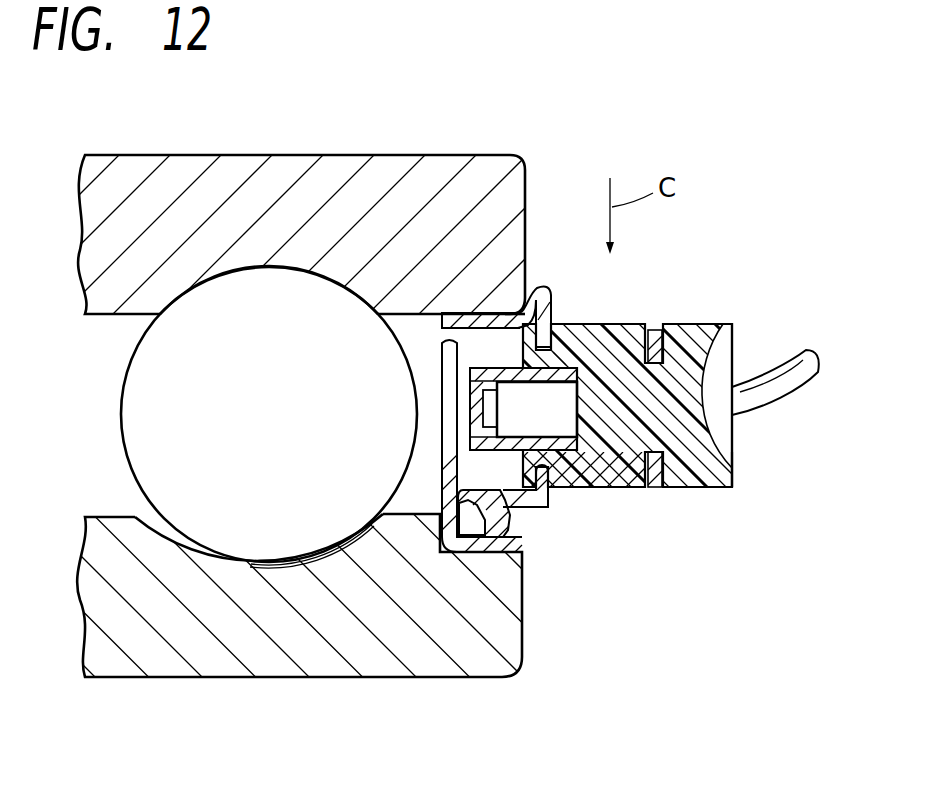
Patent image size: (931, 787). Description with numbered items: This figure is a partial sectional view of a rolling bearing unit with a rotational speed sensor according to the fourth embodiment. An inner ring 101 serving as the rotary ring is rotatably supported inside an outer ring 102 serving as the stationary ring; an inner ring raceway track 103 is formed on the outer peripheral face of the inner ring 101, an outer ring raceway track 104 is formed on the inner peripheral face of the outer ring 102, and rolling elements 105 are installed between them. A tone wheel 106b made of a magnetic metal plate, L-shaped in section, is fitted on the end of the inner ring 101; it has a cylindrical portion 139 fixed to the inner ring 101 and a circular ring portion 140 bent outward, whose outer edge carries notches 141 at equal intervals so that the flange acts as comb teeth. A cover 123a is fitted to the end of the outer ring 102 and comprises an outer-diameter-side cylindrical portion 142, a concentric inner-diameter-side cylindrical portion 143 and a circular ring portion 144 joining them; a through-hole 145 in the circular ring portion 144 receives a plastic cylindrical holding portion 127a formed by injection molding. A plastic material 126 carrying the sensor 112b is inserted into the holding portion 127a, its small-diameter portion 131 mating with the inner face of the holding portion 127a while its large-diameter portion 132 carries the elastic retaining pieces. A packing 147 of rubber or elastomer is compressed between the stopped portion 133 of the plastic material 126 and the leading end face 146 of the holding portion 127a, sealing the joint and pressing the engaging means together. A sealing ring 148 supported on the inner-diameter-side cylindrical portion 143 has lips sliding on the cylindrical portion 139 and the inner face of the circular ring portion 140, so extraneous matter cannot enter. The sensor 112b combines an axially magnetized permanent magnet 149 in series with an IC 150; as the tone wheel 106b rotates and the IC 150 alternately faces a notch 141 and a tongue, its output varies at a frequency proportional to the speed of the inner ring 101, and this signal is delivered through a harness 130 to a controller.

The inner ring 101 is at (408, 652).
The outer ring 102 is at (345, 157).
The inner ring raceway track 103 is at (236, 560).
The outer ring raceway track 104 is at (262, 268).
The rolling elements 105 is at (199, 300).
The tone wheel 106b is at (405, 560).
The sensor 112b is at (645, 488).
The cover 123a is at (487, 313).
The plastic material 126 is at (728, 323).
The cylindrical holding portion 127a is at (575, 488).
The harness 130 is at (790, 390).
The small-diameter portion 131 is at (620, 340).
The large-diameter portion 132 is at (738, 348).
The stopped portion 133 is at (700, 445).
The cylindrical portion 139 is at (455, 555).
The circular ring portion 140 is at (443, 345).
The notches 141 is at (440, 465).
The outer-diameter-side cylindrical portion 142 is at (463, 313).
The inner-diameter-side cylindrical portion 143 is at (508, 505).
The circular ring portion 144 is at (545, 285).
The through-hole 145 is at (567, 355).
The leading end face 146 is at (662, 335).
The packing 147 is at (680, 478).
The sealing ring 148 is at (503, 508).
The permanent magnet 149 is at (705, 440).
The IC 150 is at (595, 488).